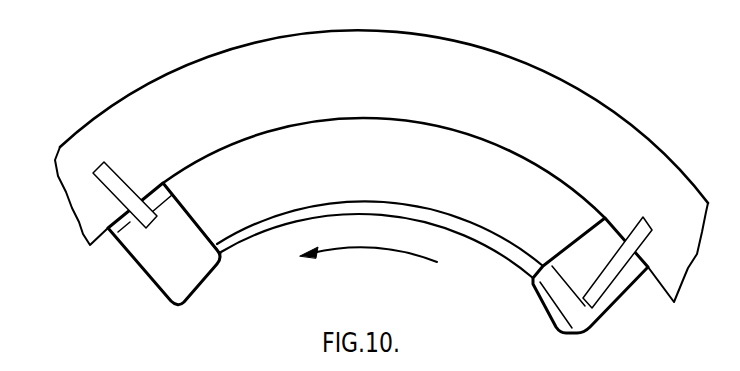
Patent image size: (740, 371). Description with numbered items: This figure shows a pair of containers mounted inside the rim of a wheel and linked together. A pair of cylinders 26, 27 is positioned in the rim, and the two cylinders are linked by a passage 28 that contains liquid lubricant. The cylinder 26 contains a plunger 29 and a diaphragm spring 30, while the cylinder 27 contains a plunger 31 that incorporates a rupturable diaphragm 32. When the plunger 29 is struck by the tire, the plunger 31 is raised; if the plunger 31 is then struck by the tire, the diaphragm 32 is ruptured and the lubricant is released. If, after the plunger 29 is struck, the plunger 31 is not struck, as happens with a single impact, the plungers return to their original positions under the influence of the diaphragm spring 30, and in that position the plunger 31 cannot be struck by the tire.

The cylinder 26 is at (152, 284).
The cylinder 27 is at (600, 306).
The passage 28 is at (374, 199).
The plunger 29 is at (116, 236).
The diaphragm spring 30 is at (108, 218).
The plunger 31 is at (600, 270).
The rupturable diaphragm 32 is at (564, 318).